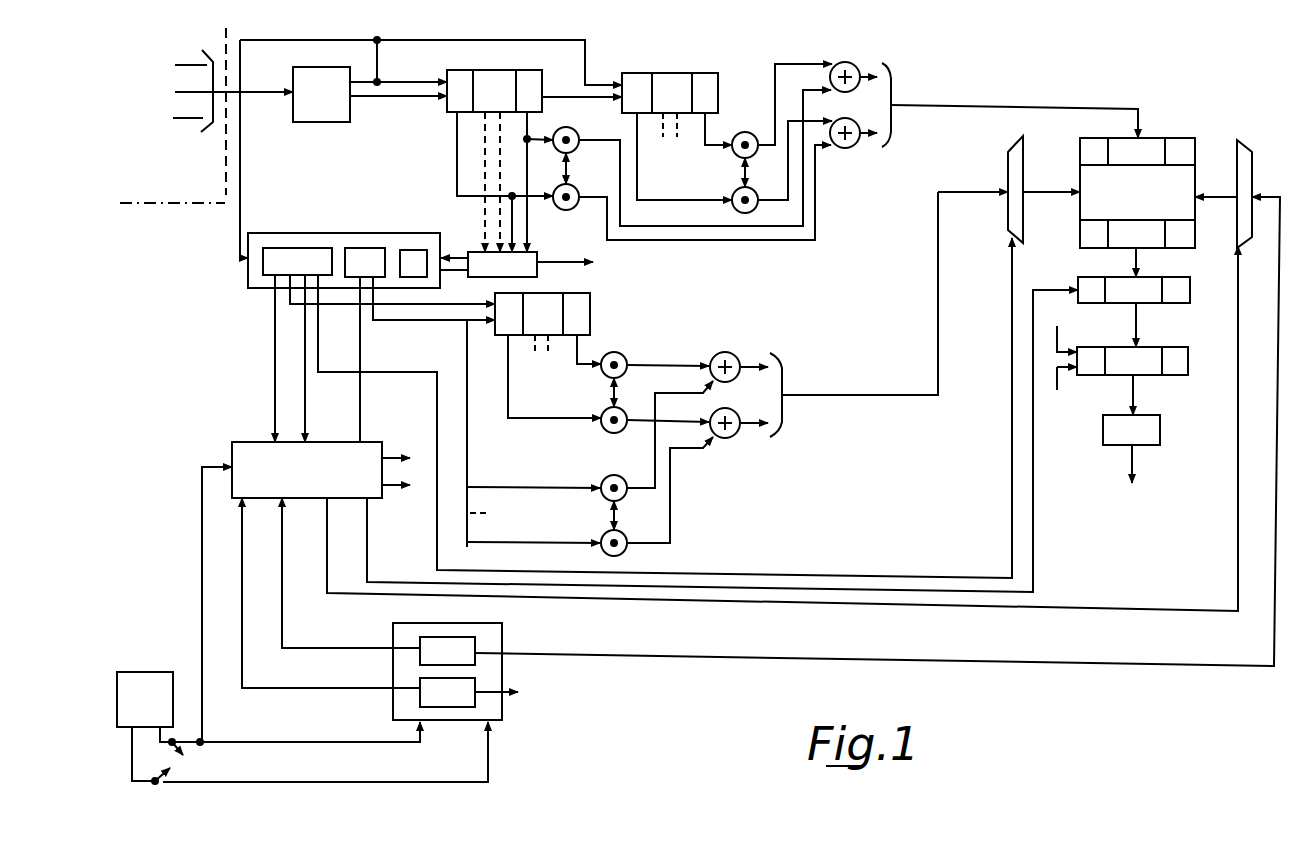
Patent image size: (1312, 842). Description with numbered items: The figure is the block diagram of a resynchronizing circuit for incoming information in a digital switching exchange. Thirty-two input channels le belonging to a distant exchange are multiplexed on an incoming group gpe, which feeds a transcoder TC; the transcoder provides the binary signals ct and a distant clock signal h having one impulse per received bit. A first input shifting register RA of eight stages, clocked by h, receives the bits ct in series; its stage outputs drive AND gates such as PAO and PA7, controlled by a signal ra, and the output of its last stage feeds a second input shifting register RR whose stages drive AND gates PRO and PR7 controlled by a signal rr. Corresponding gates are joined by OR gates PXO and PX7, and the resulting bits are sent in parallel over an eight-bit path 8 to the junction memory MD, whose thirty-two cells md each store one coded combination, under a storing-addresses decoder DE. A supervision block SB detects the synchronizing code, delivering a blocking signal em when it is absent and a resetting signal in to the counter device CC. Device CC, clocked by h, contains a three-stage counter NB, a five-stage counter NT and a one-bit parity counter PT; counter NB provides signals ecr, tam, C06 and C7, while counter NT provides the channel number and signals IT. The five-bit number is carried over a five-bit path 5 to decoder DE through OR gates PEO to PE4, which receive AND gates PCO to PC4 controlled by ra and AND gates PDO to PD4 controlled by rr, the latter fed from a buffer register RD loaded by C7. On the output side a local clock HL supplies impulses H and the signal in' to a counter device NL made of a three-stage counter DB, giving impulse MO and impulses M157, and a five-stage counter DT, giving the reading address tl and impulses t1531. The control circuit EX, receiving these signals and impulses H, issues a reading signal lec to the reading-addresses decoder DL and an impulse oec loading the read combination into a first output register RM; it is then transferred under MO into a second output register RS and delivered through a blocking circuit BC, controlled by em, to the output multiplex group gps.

The input channels le is at (173, 115).
The incoming group gpe is at (287, 92).
The transcoder TC is at (370, 79).
The distant clock signal h is at (395, 82).
The binary signals ct is at (410, 97).
The first input shifting register RA is at (517, 70).
The AND gate PA7 is at (573, 129).
The AND gate PAO is at (562, 210).
The control signal ra is at (560, 167).
The second input shifting register RR is at (698, 72).
The AND gate PR7 is at (762, 120).
The AND gate PRO is at (736, 210).
The control signal rr is at (740, 173).
The OR gate PX7 is at (838, 92).
The OR gate PXO is at (850, 148).
The eight-bit parallel path 8 is at (979, 110).
The storing-addresses decoder DE is at (1007, 148).
The memory cells md is at (1080, 152).
The junction memory MD is at (1165, 138).
The reading-addresses decoder DL is at (1248, 144).
The output time channel number tl is at (745, 657).
The counter device NL is at (502, 631).
The five-bit address path 5 is at (604, 658).
The first output register RM is at (1190, 292).
The second output register RS is at (1188, 360).
The impulse M0 MO is at (1057, 326).
The local clock impulses H is at (1057, 390).
The blocking circuit BC is at (1131, 430).
The blocking signal em is at (1103, 428).
The output multiplex group gps is at (1125, 478).
The supervision block SB is at (488, 264).
The resetting signal in is at (452, 257).
The counter device CC is at (300, 233).
The three-stage counter NB is at (297, 261).
The five-stage counter NT is at (365, 262).
The one-bit counter PT is at (413, 263).
The signals C0 and C6 C06 is at (274, 356).
The signal C7 is at (483, 304).
The signal tam is at (305, 413).
The signal ecr is at (437, 373).
The signals IT'0 and IT'31 IT is at (362, 342).
The five-stage buffer register RD is at (590, 298).
The AND gate PD4 is at (625, 351).
The AND gate PDO is at (595, 438).
The AND gate PC4 is at (601, 475).
The AND gate PCO is at (602, 552).
The OR gate PE4 is at (717, 352).
The OR gate PEO is at (735, 436).
The control circuit EX is at (292, 592).
The reading signal lec is at (327, 550).
The impulse oec is at (367, 551).
The impulses t'15 and t'31 t1531 is at (360, 648).
The impulses M1, M5 and M7 M157 is at (350, 688).
The local clock HL is at (302, 728).
The five-stage counter DT is at (447, 671).
The three-stage counter DB is at (447, 692).